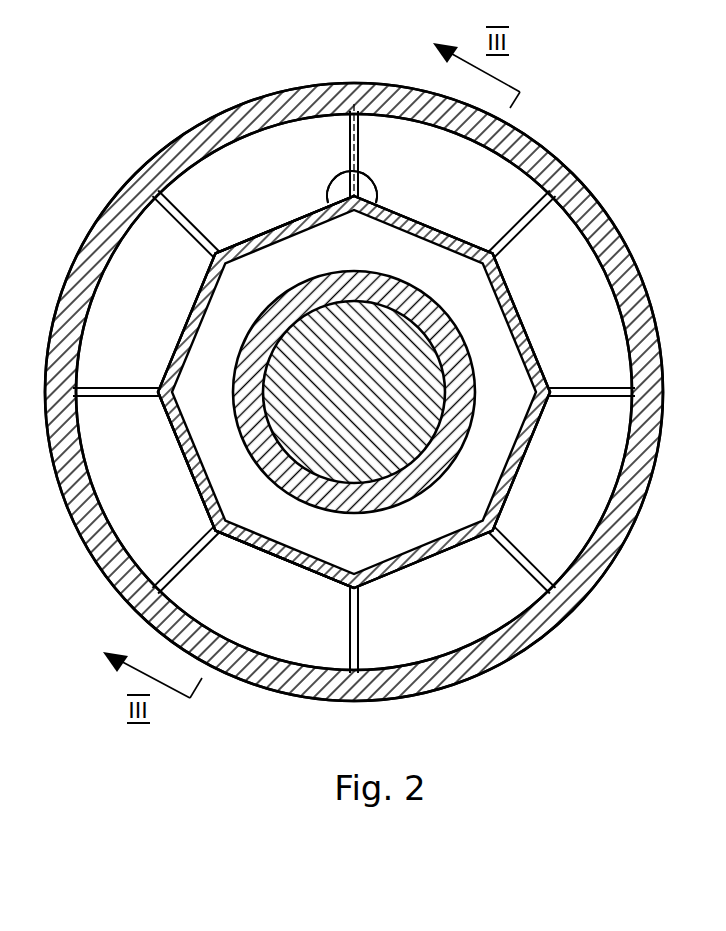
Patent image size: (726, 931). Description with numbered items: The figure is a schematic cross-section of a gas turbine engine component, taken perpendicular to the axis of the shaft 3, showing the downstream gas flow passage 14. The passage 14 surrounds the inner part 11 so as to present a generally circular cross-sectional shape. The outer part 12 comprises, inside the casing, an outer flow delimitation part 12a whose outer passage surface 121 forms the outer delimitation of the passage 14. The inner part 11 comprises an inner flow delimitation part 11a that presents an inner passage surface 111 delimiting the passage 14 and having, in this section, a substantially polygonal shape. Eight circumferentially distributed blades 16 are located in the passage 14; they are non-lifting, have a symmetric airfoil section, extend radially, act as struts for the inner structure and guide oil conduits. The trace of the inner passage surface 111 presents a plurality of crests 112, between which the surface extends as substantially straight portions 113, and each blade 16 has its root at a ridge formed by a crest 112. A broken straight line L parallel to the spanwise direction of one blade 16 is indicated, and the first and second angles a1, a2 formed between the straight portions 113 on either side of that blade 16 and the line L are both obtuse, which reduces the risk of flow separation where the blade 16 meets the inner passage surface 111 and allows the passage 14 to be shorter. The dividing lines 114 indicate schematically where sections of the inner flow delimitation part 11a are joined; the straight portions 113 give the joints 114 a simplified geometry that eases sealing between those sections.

The shaft 3 is at (275, 378).
The inner part 11 is at (195, 300).
The inner flow delimitation part 11a is at (354, 392).
The outer part 12 is at (638, 268).
The outer flow delimitation part 12a is at (354, 392).
The gas flow passage 14 is at (540, 289).
The blades 16 is at (592, 383).
The inner passage surface 111 is at (252, 237).
The crests 112 is at (215, 538).
The straight portions 113 is at (175, 435).
The dividing lines 114 is at (282, 220).
The outer passage surface 121 is at (402, 673).
The straight line L is at (357, 133).
The first angle a1 is at (336, 178).
The second angle a2 is at (372, 178).